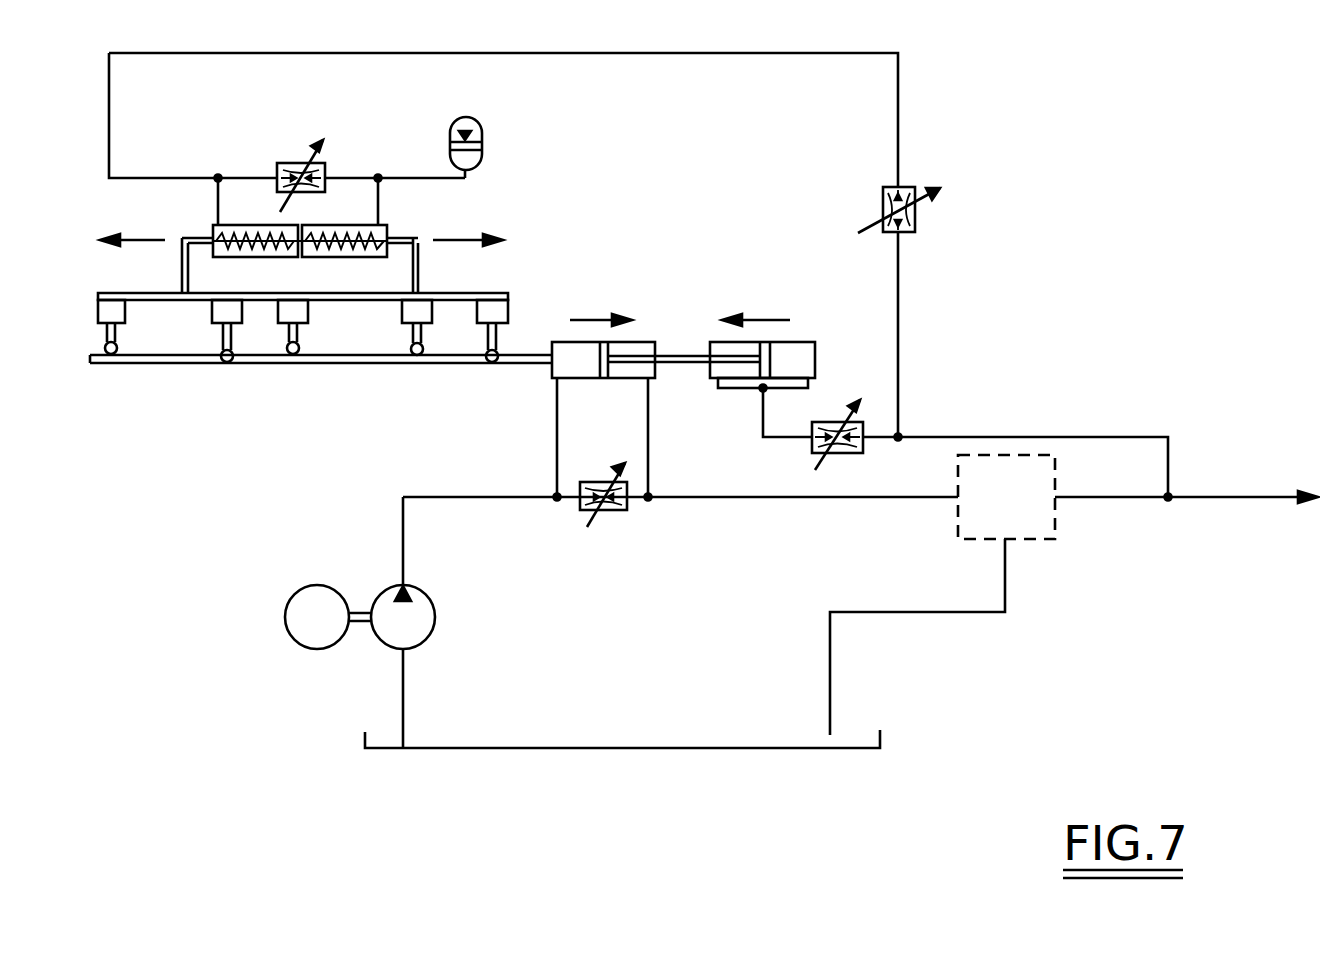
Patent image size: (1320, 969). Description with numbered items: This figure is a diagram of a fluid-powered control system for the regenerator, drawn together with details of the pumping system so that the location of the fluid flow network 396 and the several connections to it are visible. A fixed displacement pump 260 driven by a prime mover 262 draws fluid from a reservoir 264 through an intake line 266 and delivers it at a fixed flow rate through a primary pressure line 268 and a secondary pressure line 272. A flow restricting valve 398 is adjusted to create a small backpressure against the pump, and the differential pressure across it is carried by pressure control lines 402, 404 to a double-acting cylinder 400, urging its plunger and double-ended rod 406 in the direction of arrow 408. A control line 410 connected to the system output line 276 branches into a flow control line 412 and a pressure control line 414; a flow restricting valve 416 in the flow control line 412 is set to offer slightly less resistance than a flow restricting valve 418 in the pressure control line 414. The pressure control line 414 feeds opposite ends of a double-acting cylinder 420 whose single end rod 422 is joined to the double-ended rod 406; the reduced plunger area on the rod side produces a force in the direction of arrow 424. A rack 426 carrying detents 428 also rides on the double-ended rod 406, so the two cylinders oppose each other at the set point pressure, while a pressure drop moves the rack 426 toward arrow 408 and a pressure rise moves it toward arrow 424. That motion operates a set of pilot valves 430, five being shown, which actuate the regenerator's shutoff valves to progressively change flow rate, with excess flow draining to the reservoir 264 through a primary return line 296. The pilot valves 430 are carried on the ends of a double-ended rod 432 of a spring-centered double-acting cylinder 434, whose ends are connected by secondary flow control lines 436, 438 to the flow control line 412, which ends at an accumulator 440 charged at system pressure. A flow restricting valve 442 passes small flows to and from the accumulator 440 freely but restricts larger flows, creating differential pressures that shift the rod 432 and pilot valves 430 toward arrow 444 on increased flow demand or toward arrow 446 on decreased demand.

The fixed displacement pump 260 is at (446, 617).
The prime mover 262 is at (303, 593).
The reservoir 264 is at (622, 761).
The intake line 266 is at (447, 698).
The primary pressure line 268 is at (445, 541).
The secondary pressure line 272 is at (680, 519).
The system output line 276 is at (1186, 519).
The primary return line 296 is at (917, 637).
The fluid flow network 396 is at (1031, 506).
The flow restricting valve 398 is at (631, 510).
The double-acting cylinder 400 is at (582, 345).
The pressure control line 402 is at (524, 439).
The pressure control line 404 is at (615, 439).
The double-ended rod 406 is at (680, 345).
The arrow 408 is at (582, 300).
The control line 410 is at (1035, 444).
The flow control line 412 is at (545, 245).
The pressure control line 414 is at (815, 461).
The flow restricting valve 416 is at (933, 210).
The flow restricting valve 418 is at (853, 415).
The double-acting cylinder 420 is at (798, 345).
The single end rod 422 is at (749, 403).
The arrow 424 is at (774, 299).
The rack 426 is at (321, 384).
The detents 428 is at (290, 377).
The pilot valves 430 is at (303, 325).
The double-ended rod 432 is at (349, 247).
The spring-centered double-acting cylinder 434 is at (296, 257).
The secondary flow control line 436 is at (176, 203).
The secondary flow control line 438 is at (417, 201).
The accumulator 440 is at (507, 139).
The flow restricting valve 442 is at (277, 157).
The arrow 444 is at (125, 256).
The arrow 446 is at (480, 256).